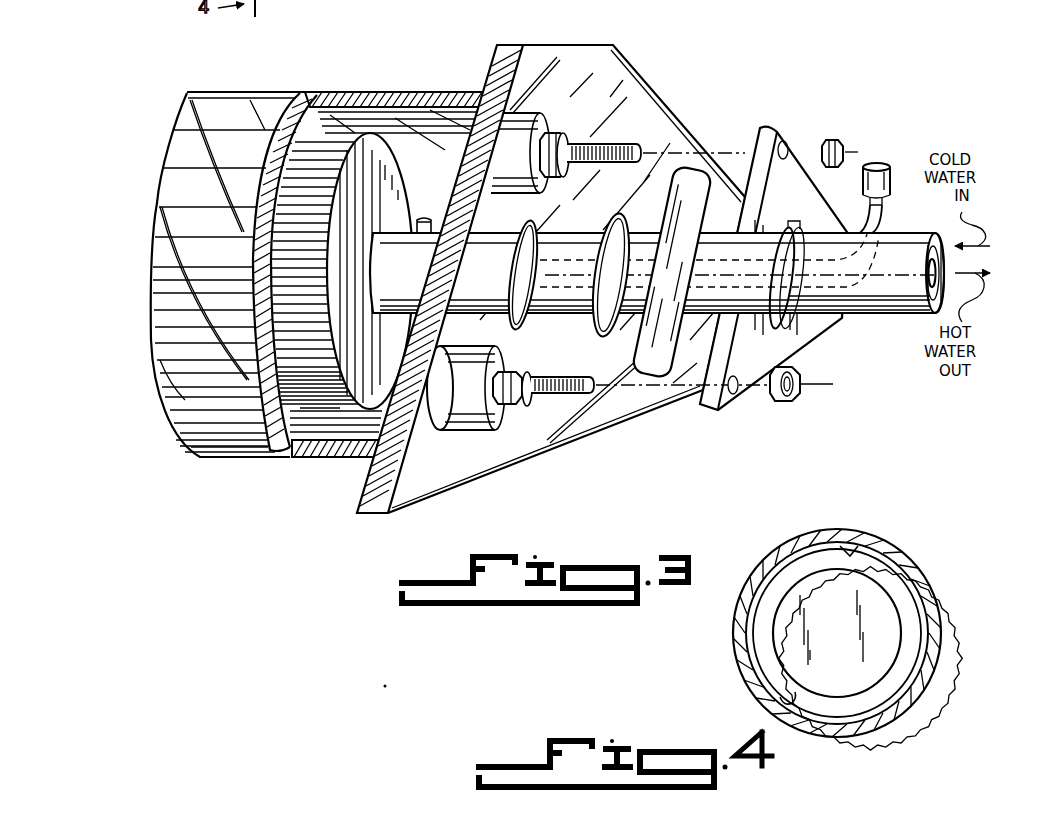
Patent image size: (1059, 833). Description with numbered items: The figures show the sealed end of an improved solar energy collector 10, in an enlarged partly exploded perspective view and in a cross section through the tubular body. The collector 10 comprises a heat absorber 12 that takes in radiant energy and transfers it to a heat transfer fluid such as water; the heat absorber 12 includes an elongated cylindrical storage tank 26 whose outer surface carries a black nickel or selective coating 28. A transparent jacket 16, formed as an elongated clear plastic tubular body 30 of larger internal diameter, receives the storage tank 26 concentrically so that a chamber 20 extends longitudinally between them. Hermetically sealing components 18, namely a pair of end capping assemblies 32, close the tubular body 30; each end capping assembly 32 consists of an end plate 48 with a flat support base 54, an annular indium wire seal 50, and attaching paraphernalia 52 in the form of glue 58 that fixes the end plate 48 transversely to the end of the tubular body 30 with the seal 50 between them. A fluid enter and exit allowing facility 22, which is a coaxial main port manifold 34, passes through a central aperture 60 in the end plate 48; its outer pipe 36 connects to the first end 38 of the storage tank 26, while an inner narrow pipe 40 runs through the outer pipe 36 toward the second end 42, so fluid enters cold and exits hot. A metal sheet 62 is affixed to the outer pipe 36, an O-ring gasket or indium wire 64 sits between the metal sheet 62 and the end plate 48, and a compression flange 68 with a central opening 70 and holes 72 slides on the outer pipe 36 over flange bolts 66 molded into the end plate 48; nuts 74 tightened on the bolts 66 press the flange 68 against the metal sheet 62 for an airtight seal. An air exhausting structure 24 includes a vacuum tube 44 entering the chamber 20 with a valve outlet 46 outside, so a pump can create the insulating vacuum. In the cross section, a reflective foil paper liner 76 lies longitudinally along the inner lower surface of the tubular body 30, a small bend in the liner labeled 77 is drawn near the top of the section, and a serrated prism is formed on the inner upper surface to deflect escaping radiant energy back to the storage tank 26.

In FIG. 3, the solar energy collector 10 is at (405, 60).
In FIG. 4, the solar energy collector 10 is at (892, 520).
In FIG. 3, the heat absorber 12 is at (337, 123).
In FIG. 4, the heat absorber 12 is at (818, 566).
In FIG. 3, the transparent jacket 16 is at (208, 82).
In FIG. 4, the transparent jacket 16 is at (753, 565).
In FIG. 3, the hermetically sealing components 18 is at (690, 117).
In FIG. 3, the chamber 20 is at (338, 425).
In FIG. 4, the chamber 20 is at (768, 665).
In FIG. 3, the heat transfer fluid enter and exit allowing facility 22 is at (870, 318).
In FIG. 3, the air exhausting structure 24 is at (872, 158).
In FIG. 3, the elongated cylindrical storage tank 26 is at (372, 132).
In FIG. 4, the elongated cylindrical storage tank 26 is at (890, 581).
In FIG. 3, the black nickel or selective coating 28 is at (312, 408).
In FIG. 4, the black nickel or selective coating 28 is at (882, 613).
In FIG. 3, the elongated clear plastic tubular body 30 is at (222, 457).
In FIG. 4, the elongated clear plastic tubular body 30 is at (936, 675).
In FIG. 3, the end capping assembly 32 is at (535, 44).
In FIG. 3, the coaxial main port manifold 34 is at (915, 314).
In FIG. 3, the outer pipe 36 is at (858, 297).
In FIG. 3, the first end 38 is at (388, 174).
In FIG. 3, the inner narrow pipe 40 is at (938, 230).
In FIG. 4, the second end 42 is at (860, 680).
In FIG. 3, the vacuum tube 44 is at (862, 217).
In FIG. 3, the valve outlet 46 is at (887, 160).
In FIG. 3, the end plate 48 is at (620, 87).
In FIG. 3, the annular indium wire seal 50 is at (462, 92).
In FIG. 3, the attaching paraphernalia 52 is at (377, 447).
In FIG. 3, the flat support base 54 is at (560, 452).
In FIG. 3, the glue 58 is at (518, 79).
In FIG. 3, the central aperture 60 is at (555, 222).
In FIG. 3, the metal sheet 62 is at (680, 196).
In FIG. 3, the O-ring gasket or indium wire 64 is at (595, 327).
In FIG. 3, the flange bolts 66 is at (592, 390).
In FIG. 3, the compression flange 68 is at (782, 135).
In FIG. 3, the central opening 70 is at (792, 222).
In FIG. 3, the holes 72 is at (730, 400).
In FIG. 3, the nuts 74 is at (783, 400).
In FIG. 4, the reflective foil paper liner 76 is at (785, 698).
In FIG. 4, the coil bend 77 is at (845, 545).